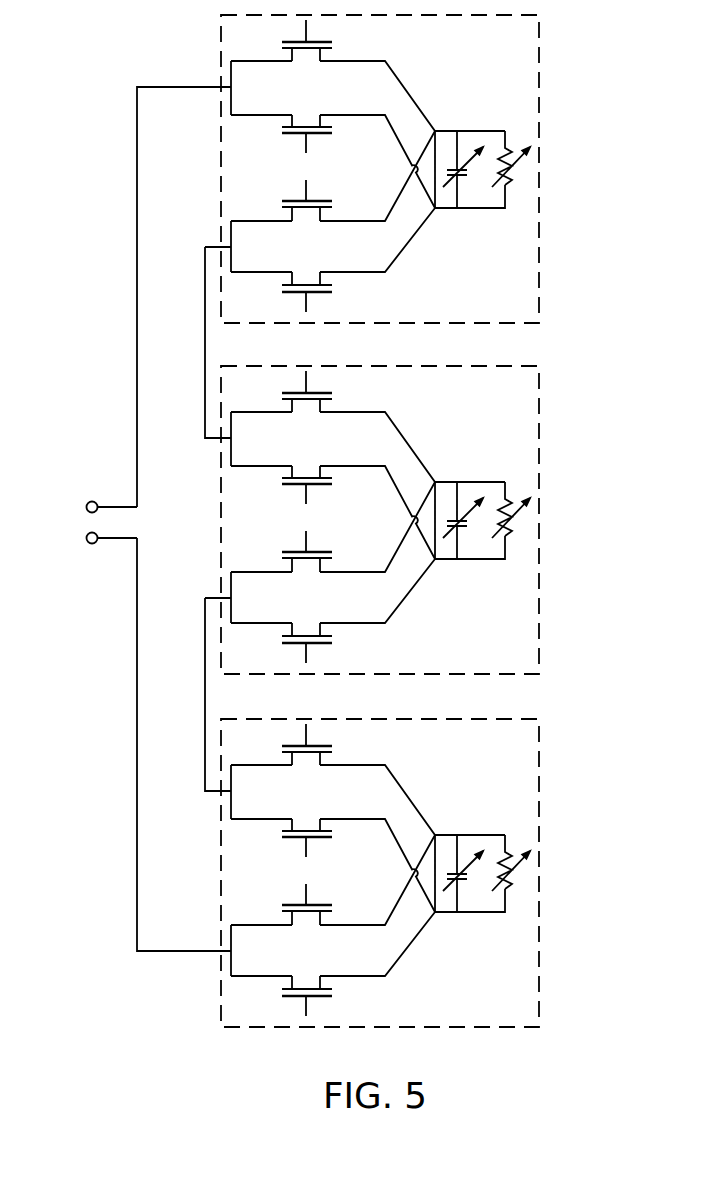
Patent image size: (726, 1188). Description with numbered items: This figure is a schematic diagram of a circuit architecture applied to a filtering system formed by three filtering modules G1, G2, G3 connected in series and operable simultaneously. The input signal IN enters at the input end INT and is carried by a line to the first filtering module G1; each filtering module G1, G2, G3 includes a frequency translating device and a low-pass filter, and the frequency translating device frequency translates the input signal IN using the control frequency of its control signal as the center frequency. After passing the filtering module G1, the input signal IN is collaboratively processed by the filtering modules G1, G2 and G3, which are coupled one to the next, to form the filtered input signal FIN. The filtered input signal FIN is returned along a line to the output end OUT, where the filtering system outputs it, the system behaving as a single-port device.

The filtering module G1 is at (541, 72).
The filtering module G2 is at (410, 520).
The filtering module G3 is at (410, 873).
The input signal IN is at (131, 339).
The filtered input signal FIN is at (122, 696).
The input end INT is at (89, 506).
The output end OUT is at (89, 538).